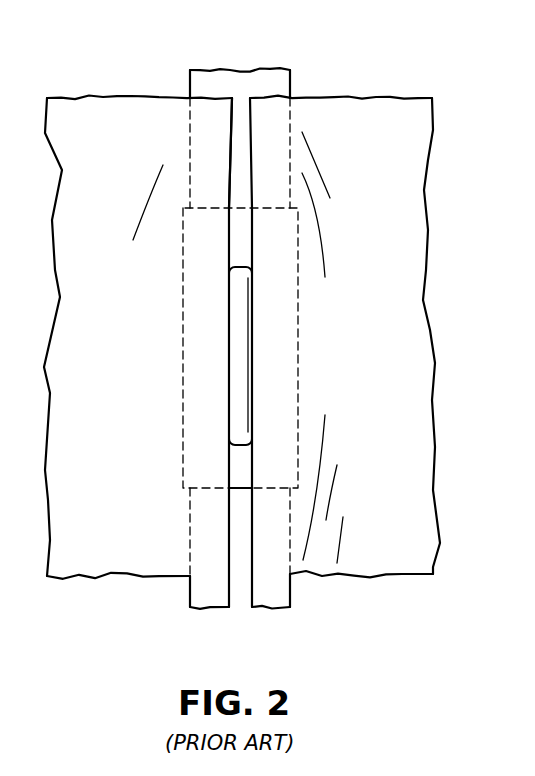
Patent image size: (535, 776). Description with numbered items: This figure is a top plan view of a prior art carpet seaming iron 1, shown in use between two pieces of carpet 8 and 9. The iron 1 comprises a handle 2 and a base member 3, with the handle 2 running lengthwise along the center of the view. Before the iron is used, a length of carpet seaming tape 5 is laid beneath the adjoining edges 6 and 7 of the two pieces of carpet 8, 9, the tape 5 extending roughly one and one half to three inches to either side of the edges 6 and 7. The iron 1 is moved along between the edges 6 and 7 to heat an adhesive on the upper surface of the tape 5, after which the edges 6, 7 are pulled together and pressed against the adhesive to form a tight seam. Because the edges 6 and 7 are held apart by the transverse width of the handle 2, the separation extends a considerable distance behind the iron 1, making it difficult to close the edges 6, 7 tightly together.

The carpet seaming iron 1 is at (367, 123).
The handle 2 is at (195, 356).
The base member 3 is at (321, 348).
The carpet seaming tape 5 is at (268, 329).
The edge 6 is at (246, 137).
The edge 7 is at (264, 311).
The piece of carpet 8 is at (364, 337).
The piece of carpet 9 is at (138, 370).